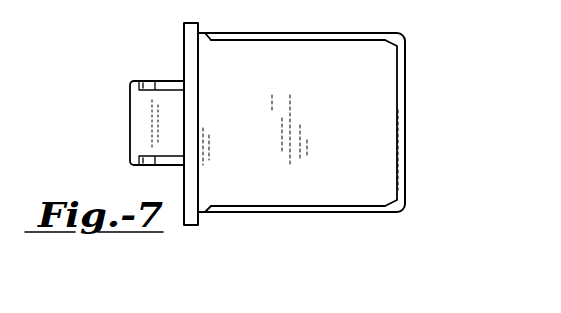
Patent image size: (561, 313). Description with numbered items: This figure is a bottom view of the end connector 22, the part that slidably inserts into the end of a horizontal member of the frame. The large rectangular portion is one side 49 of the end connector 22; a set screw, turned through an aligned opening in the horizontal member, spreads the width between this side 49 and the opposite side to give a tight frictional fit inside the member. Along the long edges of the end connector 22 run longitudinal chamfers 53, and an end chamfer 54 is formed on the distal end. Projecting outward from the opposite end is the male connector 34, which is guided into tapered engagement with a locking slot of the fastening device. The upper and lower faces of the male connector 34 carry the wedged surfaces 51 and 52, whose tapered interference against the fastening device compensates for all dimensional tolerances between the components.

The end connector 22 is at (172, 65).
The male connector 34 is at (130, 162).
The side 49 is at (367, 137).
The wedged surface 51 is at (150, 90).
The wedged surface 52 is at (150, 165).
The longitudinal chamfer 53 is at (330, 40).
The end chamfer 54 is at (405, 65).